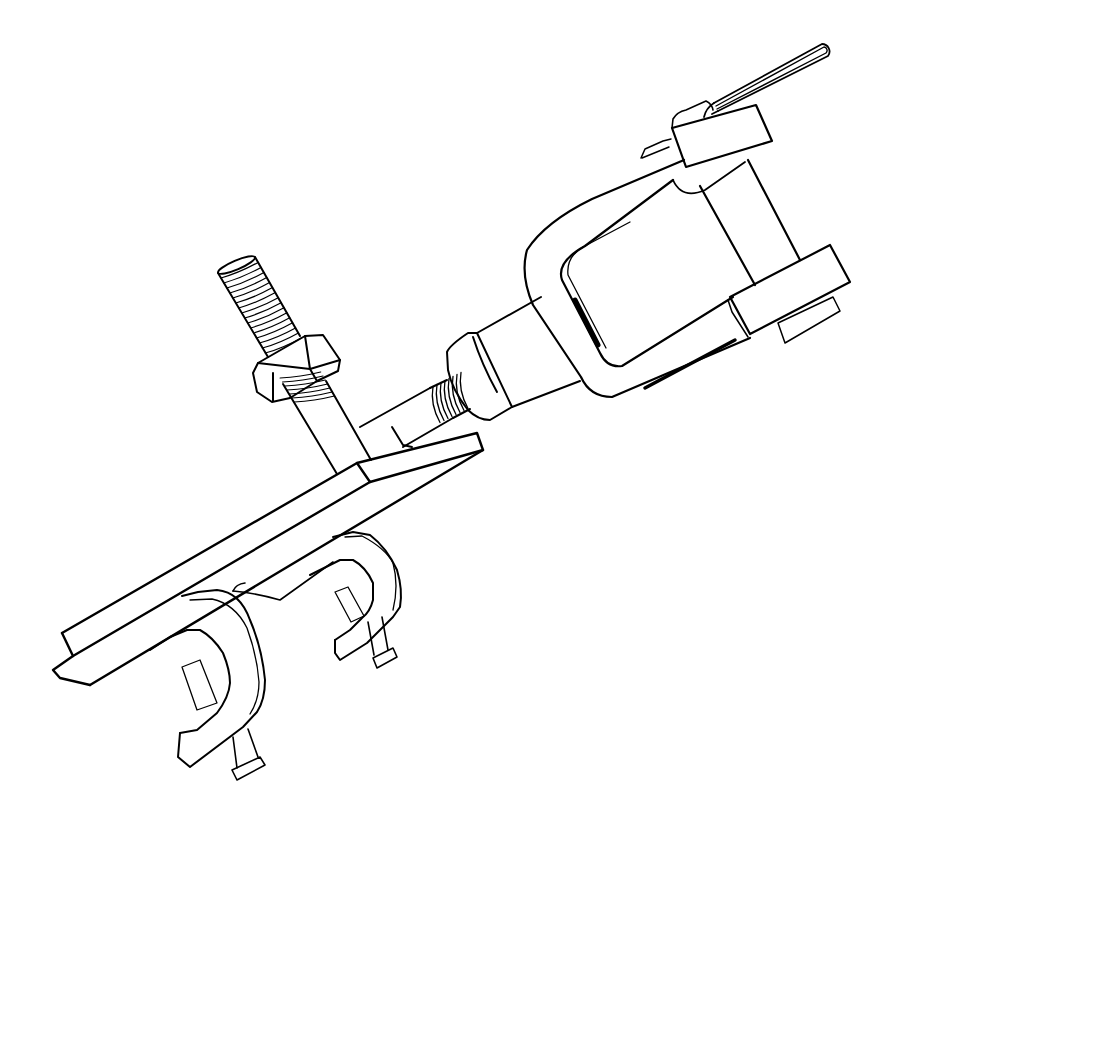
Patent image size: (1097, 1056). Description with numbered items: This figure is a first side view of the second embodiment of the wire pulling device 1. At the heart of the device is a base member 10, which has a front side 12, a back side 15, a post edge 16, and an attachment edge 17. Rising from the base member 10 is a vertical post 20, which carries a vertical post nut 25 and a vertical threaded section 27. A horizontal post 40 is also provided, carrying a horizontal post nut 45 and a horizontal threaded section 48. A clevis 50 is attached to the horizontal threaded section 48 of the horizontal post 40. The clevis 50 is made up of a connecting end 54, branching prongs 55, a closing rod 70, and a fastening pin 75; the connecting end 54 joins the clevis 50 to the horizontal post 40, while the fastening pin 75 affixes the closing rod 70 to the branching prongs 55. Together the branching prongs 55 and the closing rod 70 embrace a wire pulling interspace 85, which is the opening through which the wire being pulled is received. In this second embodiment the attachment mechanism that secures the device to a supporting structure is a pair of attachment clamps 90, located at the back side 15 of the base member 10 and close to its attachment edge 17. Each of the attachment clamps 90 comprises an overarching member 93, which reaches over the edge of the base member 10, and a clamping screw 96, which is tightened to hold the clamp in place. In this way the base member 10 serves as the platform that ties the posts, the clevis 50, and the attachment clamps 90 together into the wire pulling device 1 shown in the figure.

The wire pulling device 1 is at (629, 641).
The base member 10 is at (164, 536).
The front side 12 is at (268, 512).
The back side 15 is at (387, 497).
The post edge 16 is at (468, 445).
The attachment edge 17 is at (243, 590).
The vertical post 20 is at (414, 362).
The vertical post nut 25 is at (460, 351).
The vertical threaded section 27 is at (441, 377).
The horizontal post 40 is at (338, 304).
The horizontal post nut 45 is at (322, 348).
The horizontal threaded section 48 is at (268, 274).
The clevis 50 is at (539, 180).
The connecting end 54 is at (545, 385).
The branching prongs 55 is at (586, 218).
The closing rod 70 is at (752, 203).
The fastening pin 75 is at (817, 44).
The wire pulling interspace 85 is at (690, 253).
The attachment clamps 90 is at (427, 609).
The overarching member 93 is at (250, 691).
The clamping screw 96 is at (248, 778).